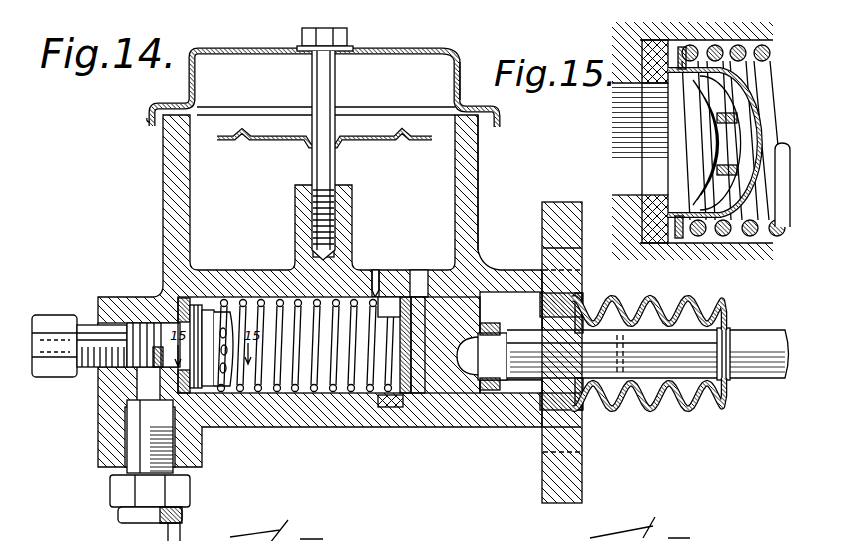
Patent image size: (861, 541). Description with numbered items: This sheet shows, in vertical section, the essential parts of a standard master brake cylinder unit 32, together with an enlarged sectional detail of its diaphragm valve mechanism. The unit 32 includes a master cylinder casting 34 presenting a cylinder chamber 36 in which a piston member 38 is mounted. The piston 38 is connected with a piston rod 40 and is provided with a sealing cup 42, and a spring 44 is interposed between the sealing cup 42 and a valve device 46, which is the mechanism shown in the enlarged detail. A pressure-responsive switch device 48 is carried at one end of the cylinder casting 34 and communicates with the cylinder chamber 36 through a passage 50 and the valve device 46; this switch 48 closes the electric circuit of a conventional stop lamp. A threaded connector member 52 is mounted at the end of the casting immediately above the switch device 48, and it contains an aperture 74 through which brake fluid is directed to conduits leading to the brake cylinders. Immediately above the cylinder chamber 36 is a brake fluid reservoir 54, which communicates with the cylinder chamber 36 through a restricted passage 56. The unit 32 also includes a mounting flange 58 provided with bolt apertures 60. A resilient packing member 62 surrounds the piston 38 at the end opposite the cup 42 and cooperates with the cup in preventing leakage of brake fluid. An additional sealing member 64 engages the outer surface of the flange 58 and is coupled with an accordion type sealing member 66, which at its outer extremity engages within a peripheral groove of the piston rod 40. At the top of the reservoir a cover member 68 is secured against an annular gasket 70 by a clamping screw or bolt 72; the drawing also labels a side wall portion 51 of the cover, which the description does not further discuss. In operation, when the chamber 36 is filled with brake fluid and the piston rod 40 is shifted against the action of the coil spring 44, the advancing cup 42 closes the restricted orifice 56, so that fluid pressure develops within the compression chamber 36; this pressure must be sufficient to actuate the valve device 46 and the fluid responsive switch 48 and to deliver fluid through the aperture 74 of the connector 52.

In FIG. 14, the master brake cylinder unit 32 is at (158, 177).
In FIG. 14, the master cylinder casting 34 is at (467, 161).
In FIG. 14, the brake fluid reservoir 54 is at (326, 168).
In FIG. 14, the passage 56 is at (375, 283).
In FIG. 14, the cylinder chamber 36 is at (329, 397).
In FIG. 15, the cylinder chamber 36 is at (765, 237).
In FIG. 14, the passage 50 is at (147, 390).
In FIG. 14, the cover member 68 is at (385, 47).
In FIG. 14, the cover side wall 51 is at (462, 72).
In FIG. 14, the annular gasket 70 is at (163, 117).
In FIG. 14, the clamping screw or bolt 72 is at (335, 87).
In FIG. 14, the threaded connector member 52 is at (55, 323).
In FIG. 14, the aperture 74 is at (50, 363).
In FIG. 14, the valve device 46 is at (213, 330).
In FIG. 15, the valve device 46 is at (682, 152).
In FIG. 14, the spring 44 is at (293, 393).
In FIG. 15, the spring 44 is at (768, 58).
In FIG. 14, the sealing cup 42 is at (397, 407).
In FIG. 14, the piston member 38 is at (440, 380).
In FIG. 14, the piston rod 40 is at (760, 363).
In FIG. 14, the mounting flange 58 is at (563, 492).
In FIG. 14, the bolt apertures 60 is at (547, 253).
In FIG. 14, the resilient packing member 62 is at (577, 277).
In FIG. 14, the sealing member 64 is at (582, 413).
In FIG. 14, the accordion type sealing member 66 is at (655, 297).
In FIG. 14, the pressure-responsive switch device 48 is at (110, 493).